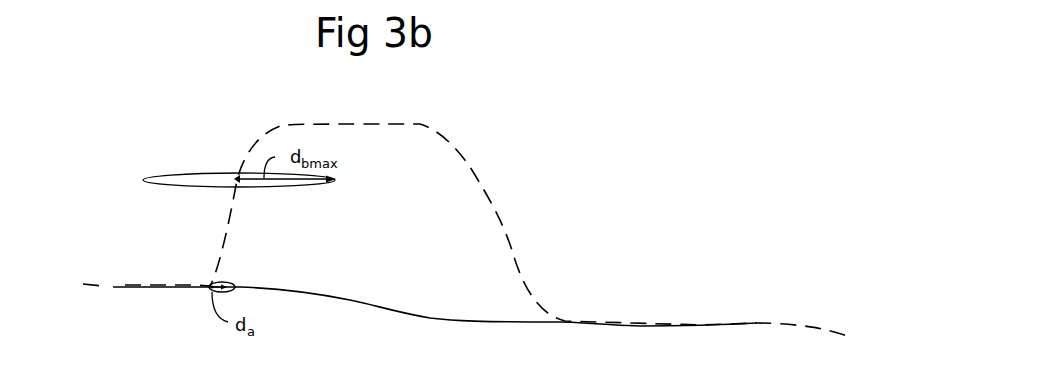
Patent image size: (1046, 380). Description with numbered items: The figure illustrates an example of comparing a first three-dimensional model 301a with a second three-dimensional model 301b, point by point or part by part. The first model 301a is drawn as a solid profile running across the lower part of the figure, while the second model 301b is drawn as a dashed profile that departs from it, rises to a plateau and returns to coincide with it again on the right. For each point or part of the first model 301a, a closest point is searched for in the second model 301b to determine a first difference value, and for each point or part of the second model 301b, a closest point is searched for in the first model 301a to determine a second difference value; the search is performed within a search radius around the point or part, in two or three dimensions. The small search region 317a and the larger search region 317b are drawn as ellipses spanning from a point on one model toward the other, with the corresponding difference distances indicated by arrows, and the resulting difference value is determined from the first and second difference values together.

The first 3D model 301a is at (397, 310).
The second 3D model 301b is at (507, 234).
The first contact ellipse 317a is at (214, 284).
The second contact ellipse 317b is at (237, 180).